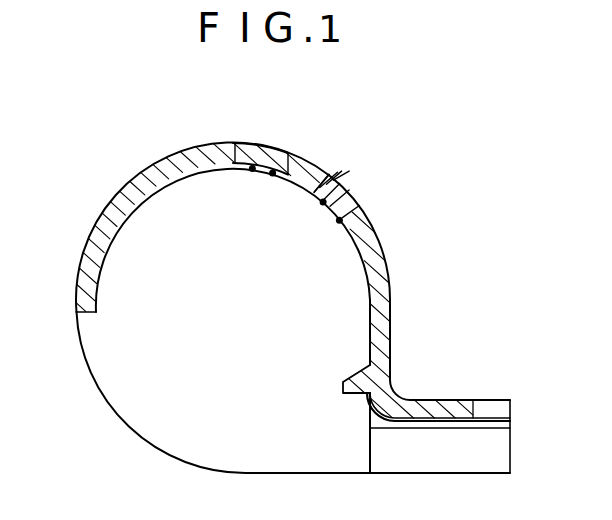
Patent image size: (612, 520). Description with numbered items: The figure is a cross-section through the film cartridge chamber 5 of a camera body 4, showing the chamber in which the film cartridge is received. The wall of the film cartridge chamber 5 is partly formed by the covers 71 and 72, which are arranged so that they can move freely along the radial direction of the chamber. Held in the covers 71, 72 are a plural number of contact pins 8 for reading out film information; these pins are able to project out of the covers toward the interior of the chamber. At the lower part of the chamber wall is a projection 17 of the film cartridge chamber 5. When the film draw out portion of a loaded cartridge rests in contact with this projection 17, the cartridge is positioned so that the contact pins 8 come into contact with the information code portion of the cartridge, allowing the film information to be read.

The camera body 4 is at (447, 482).
The film cartridge chamber 5 is at (110, 343).
The contact pin 8 is at (273, 178).
The projection 17 is at (343, 387).
The cover 71 is at (348, 190).
The cover 72 is at (267, 146).